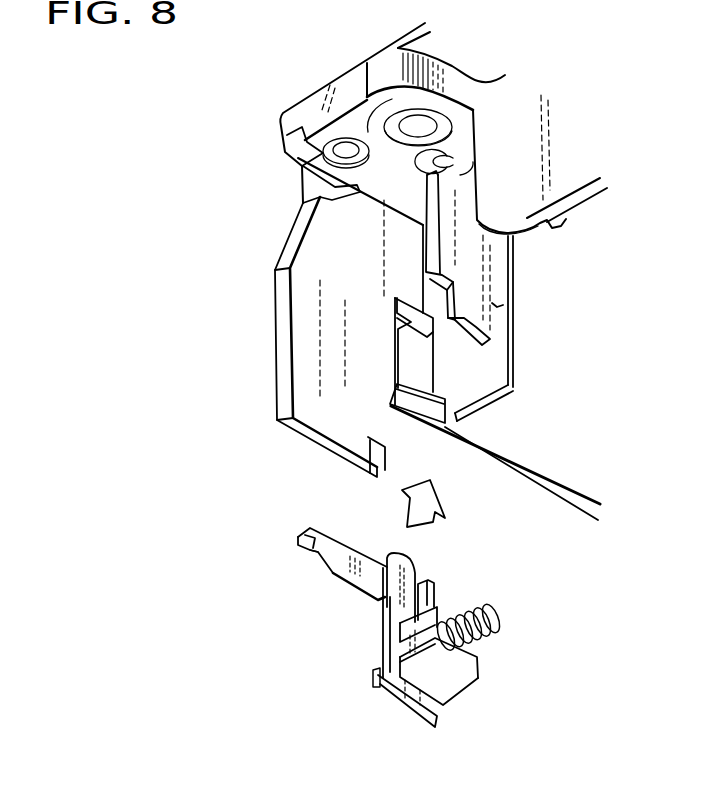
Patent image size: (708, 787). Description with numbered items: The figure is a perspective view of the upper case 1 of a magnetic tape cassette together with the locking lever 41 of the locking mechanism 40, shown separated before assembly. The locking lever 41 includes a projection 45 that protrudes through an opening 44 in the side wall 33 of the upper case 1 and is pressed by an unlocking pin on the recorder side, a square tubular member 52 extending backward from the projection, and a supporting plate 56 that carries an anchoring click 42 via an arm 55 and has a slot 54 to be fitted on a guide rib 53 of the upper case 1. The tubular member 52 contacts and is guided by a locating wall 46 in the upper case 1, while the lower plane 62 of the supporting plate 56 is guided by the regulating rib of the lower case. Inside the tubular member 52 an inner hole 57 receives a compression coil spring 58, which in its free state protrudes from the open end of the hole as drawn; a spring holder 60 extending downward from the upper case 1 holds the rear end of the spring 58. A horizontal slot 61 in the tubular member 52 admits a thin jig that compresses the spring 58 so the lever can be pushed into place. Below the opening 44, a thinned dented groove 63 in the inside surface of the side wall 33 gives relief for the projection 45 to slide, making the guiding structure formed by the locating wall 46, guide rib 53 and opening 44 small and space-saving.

The upper case 1 is at (293, 102).
The side wall 33 is at (318, 392).
The locking mechanism 40 is at (453, 626).
The locking lever 41 is at (493, 677).
The anchoring click 42 is at (298, 546).
The opening 44 is at (398, 360).
The projection 45 is at (373, 681).
The locating wall 46 is at (488, 370).
The tubular member 52 is at (462, 690).
The guide rib 53 is at (437, 297).
The slot 54 is at (418, 574).
The arm 55 is at (320, 531).
The supporting plate 56 is at (390, 617).
The inner hole 57 is at (470, 653).
The compression coil spring 58 is at (498, 612).
The spring holder 60 is at (487, 307).
The horizontal slot 61 is at (447, 597).
The lower plane 62 is at (407, 707).
The dented groove 63 is at (427, 410).